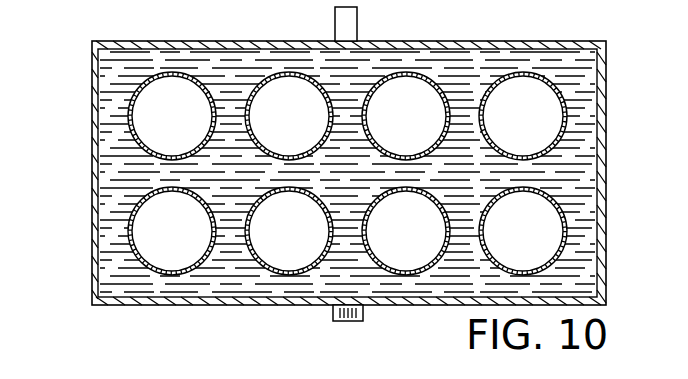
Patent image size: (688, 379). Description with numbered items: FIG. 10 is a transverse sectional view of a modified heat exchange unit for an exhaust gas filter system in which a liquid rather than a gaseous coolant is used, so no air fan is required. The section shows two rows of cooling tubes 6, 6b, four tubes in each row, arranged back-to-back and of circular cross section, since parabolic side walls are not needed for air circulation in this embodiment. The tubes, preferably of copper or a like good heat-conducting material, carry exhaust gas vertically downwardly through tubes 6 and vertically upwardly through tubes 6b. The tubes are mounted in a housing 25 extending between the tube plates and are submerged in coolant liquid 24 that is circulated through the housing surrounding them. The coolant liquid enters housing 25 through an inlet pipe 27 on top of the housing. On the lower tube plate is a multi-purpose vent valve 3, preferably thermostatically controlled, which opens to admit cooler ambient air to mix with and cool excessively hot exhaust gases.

The housing 25 is at (606, 63).
The coolant liquid 24 is at (119, 67).
The cooling tubes 6b is at (210, 107).
The cooling tubes 6 is at (326, 220).
The inlet pipe 27 is at (352, 22).
The vent valve 3 is at (363, 316).